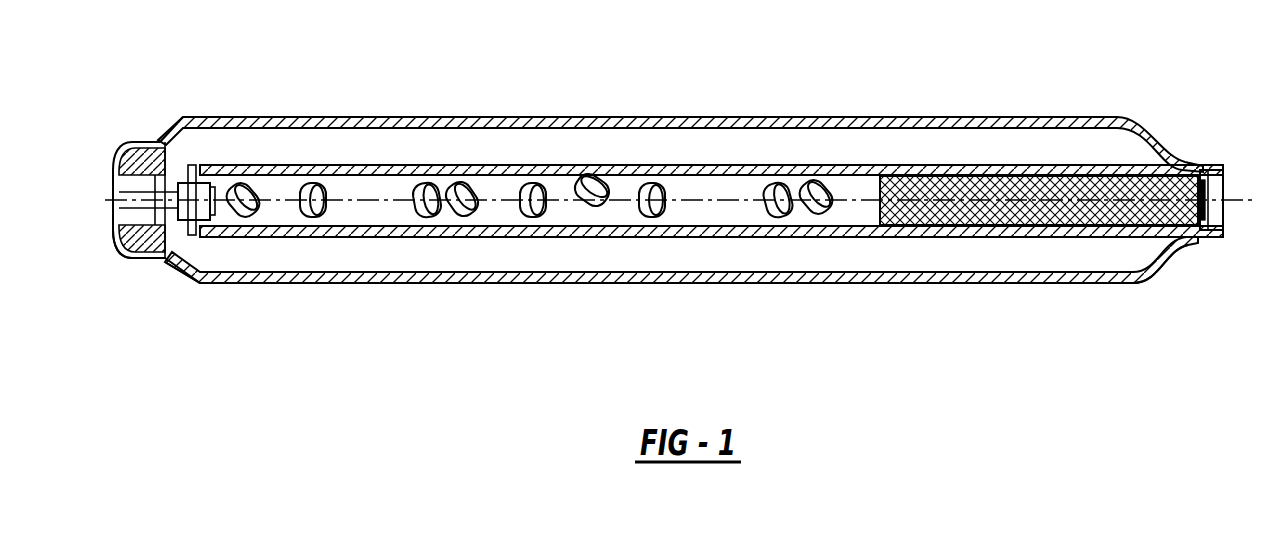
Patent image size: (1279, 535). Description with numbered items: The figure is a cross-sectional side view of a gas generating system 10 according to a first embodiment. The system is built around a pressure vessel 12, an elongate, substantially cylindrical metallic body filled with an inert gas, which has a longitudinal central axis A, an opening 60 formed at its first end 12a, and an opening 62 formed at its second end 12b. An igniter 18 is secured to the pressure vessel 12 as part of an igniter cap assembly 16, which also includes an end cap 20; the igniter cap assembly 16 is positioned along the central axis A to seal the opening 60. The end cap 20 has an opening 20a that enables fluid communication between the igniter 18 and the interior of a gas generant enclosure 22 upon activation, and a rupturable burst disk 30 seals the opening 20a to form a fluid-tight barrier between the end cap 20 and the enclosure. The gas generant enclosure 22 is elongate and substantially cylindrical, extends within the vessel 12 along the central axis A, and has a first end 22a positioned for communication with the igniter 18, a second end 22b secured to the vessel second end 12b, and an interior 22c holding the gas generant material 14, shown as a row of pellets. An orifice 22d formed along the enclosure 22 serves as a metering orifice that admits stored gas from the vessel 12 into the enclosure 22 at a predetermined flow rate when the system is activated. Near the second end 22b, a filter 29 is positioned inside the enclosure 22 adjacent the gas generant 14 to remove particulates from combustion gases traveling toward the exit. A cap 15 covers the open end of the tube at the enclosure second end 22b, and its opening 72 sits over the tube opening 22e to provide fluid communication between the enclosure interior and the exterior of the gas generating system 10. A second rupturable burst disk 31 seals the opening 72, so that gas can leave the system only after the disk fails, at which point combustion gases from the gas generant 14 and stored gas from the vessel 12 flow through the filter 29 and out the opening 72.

The gas generating system 10 is at (418, 430).
The pressure vessel 12 is at (406, 283).
The first end of vessel 12a is at (178, 267).
The second end of vessel 12b is at (1133, 284).
The gas generant material 14 is at (545, 216).
The cap 15 is at (1226, 243).
The igniter cap assembly 16 is at (113, 165).
The igniter 18 is at (114, 235).
The end cap 20 is at (127, 260).
The opening in end cap 20a is at (205, 170).
The gas generant enclosure 22 is at (683, 238).
The first end of enclosure 22a is at (235, 232).
The second end of enclosure 22b is at (1118, 170).
The interior of enclosure 22c is at (360, 184).
The orifice 22d is at (293, 172).
The opening at end of tube 22e is at (1233, 166).
The filter 29 is at (1061, 172).
The burst disk 30 is at (222, 210).
The burst disk 31 is at (1245, 178).
The opening 60 is at (124, 142).
The opening 62 is at (1210, 158).
The opening in cap 72 is at (1224, 228).
The longitudinal central axis A is at (1238, 204).